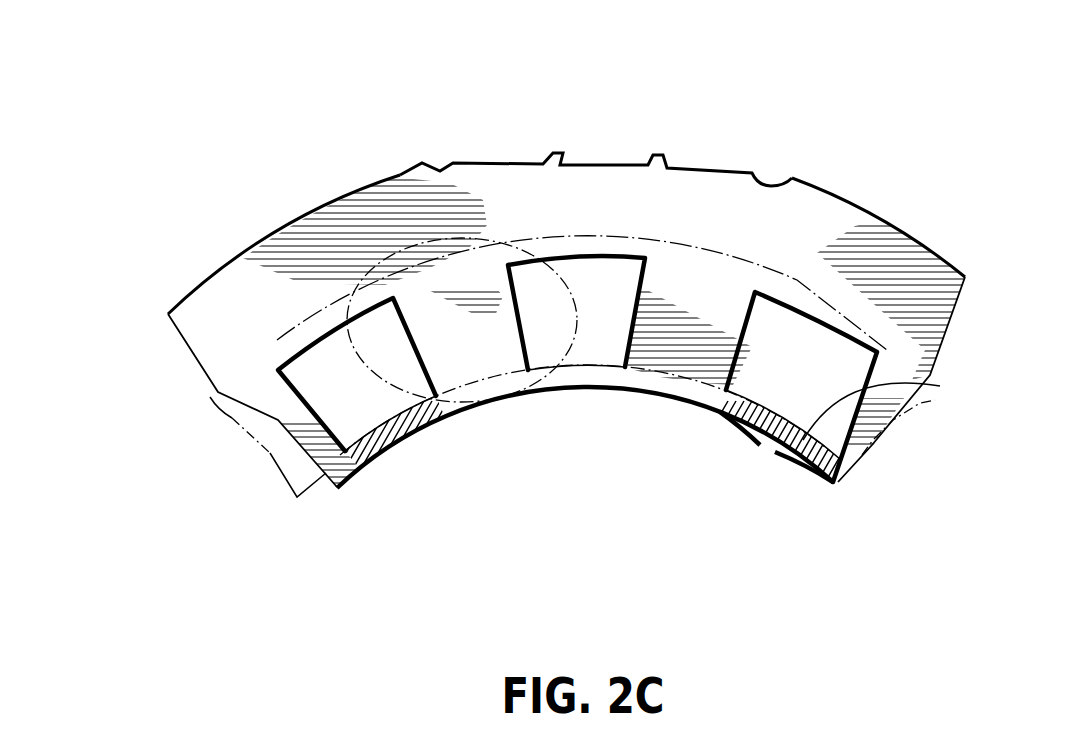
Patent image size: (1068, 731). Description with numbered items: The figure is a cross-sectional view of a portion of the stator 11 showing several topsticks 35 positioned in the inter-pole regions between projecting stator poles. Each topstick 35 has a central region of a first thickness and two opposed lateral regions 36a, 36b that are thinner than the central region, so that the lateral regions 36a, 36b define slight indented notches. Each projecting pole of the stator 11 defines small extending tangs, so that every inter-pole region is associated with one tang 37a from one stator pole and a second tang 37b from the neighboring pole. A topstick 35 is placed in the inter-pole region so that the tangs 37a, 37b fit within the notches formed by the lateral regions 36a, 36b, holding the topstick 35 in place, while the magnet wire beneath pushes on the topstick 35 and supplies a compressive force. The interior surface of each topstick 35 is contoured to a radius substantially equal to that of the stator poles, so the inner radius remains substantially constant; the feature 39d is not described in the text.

The stator 11 is at (272, 214).
The positioning notch 39d is at (597, 160).
The topstick 35 is at (400, 456).
The lateral region 36a is at (743, 397).
The lateral region 36b is at (935, 381).
The tang 37a is at (723, 402).
The tang 37b is at (810, 458).